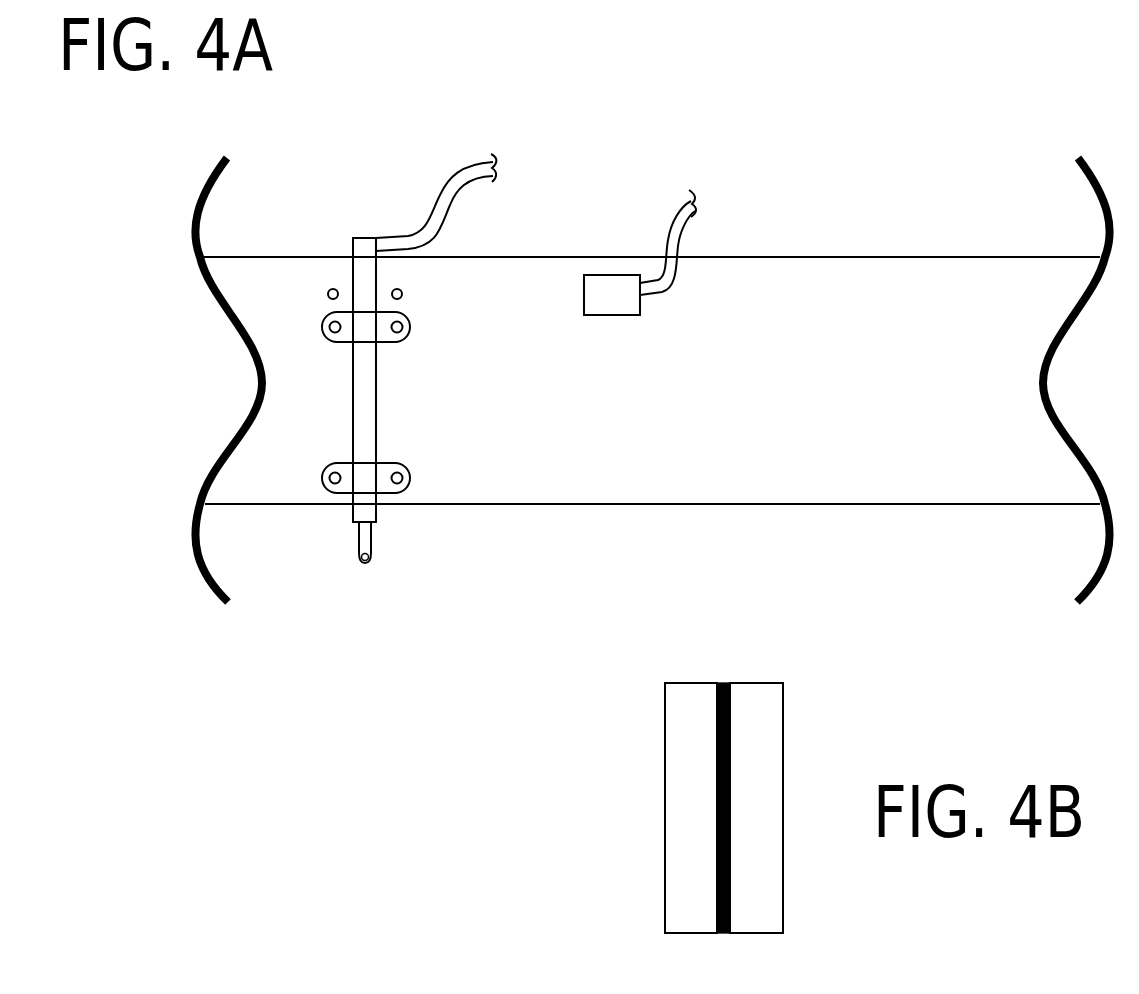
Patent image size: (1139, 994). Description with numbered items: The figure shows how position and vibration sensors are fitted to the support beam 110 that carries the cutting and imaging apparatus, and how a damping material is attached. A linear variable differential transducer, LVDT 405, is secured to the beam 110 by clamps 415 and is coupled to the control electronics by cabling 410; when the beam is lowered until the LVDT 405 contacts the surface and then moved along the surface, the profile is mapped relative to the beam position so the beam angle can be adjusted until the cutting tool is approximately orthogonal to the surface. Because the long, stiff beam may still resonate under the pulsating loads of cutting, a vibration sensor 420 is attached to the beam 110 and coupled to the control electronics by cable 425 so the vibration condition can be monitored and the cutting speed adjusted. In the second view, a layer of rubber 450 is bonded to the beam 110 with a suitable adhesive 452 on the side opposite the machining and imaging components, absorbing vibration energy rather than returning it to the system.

In FIG. 4A, the beam 110 is at (889, 270).
In FIG. 4B, the beam 110 is at (783, 740).
In FIG. 4A, the LVDT 405 is at (363, 237).
In FIG. 4A, the cabling 410 is at (457, 167).
In FIG. 4A, the clamps 415 is at (321, 330).
In FIG. 4A, the vibration sensor 420 is at (612, 275).
In FIG. 4A, the cable 425 is at (678, 202).
In FIG. 4B, the layer of rubber 450 is at (665, 740).
In FIG. 4B, the adhesive 452 is at (723, 683).